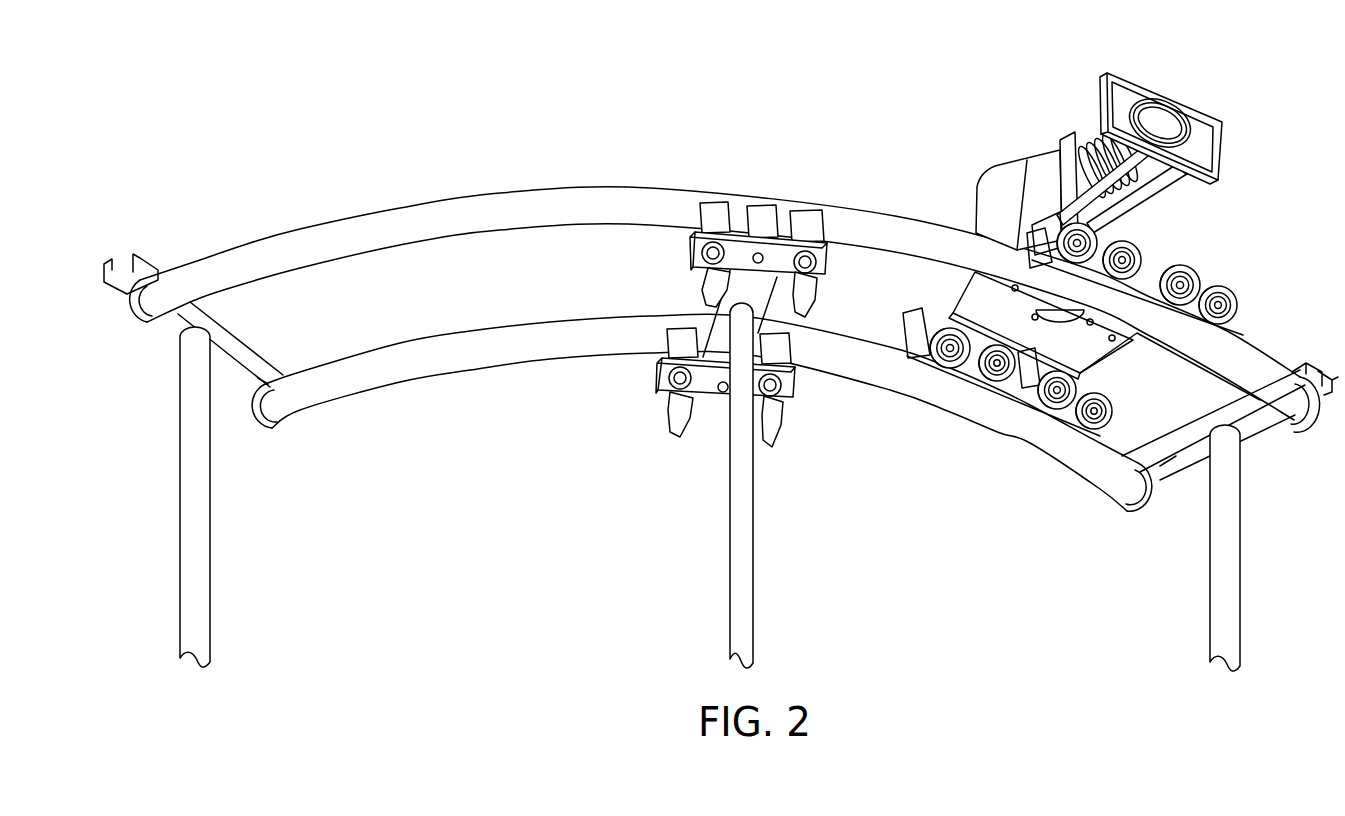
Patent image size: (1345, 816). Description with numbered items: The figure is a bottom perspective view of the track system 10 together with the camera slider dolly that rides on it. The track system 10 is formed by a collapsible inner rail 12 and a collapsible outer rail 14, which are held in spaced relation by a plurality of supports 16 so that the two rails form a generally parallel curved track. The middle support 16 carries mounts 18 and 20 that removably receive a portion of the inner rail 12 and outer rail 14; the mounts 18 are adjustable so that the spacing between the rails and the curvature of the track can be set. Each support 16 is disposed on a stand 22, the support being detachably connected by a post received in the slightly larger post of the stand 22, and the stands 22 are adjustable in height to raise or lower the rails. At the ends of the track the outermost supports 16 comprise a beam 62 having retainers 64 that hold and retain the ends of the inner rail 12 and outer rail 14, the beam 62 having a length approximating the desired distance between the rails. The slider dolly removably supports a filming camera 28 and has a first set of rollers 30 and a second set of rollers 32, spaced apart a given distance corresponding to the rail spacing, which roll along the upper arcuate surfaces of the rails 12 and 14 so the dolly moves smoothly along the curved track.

The track system 10 is at (466, 433).
The inner rail 12 is at (523, 353).
The outer rail 14 is at (480, 206).
The support 16 is at (243, 332).
The mount 18 is at (677, 343).
The mount 20 is at (766, 220).
The stand 22 is at (192, 518).
The filming camera 28 is at (1052, 172).
The first set of rollers 30 is at (1033, 396).
The second set of rollers 32 is at (1216, 284).
The beam 62 is at (232, 375).
The retainer 64 is at (128, 318).